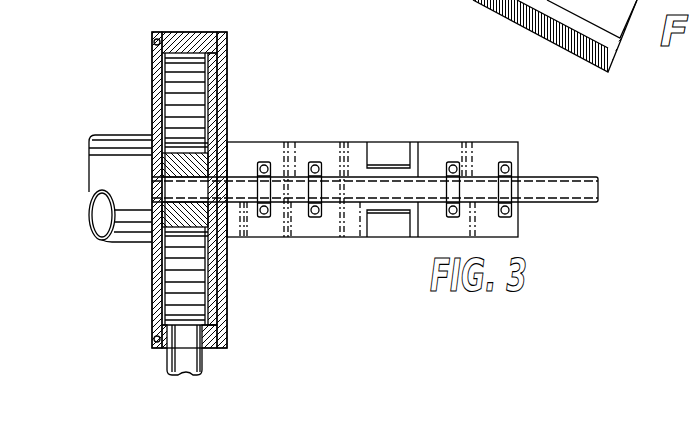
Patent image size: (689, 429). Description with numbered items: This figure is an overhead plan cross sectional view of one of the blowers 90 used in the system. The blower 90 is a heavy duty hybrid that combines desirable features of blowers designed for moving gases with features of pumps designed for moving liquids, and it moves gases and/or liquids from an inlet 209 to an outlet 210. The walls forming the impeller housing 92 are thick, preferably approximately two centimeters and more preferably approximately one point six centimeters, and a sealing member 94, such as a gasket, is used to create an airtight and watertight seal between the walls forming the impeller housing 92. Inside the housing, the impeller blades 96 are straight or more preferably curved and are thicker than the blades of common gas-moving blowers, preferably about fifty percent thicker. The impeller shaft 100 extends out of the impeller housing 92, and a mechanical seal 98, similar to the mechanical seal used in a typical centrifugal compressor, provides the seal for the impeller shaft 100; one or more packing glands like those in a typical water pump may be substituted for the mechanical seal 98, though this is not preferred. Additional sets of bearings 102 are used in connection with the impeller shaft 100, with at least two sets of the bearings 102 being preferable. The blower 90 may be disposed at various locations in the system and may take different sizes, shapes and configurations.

The blower 90 is at (292, 40).
The impeller housing 92 is at (227, 43).
The sealing member 94 is at (154, 42).
The impeller blades 96 is at (167, 303).
The mechanical seal 98 is at (383, 170).
The impeller shaft 100 is at (345, 181).
The bearings 102 is at (264, 162).
The inlet 209 is at (133, 165).
The outlet 210 is at (170, 362).